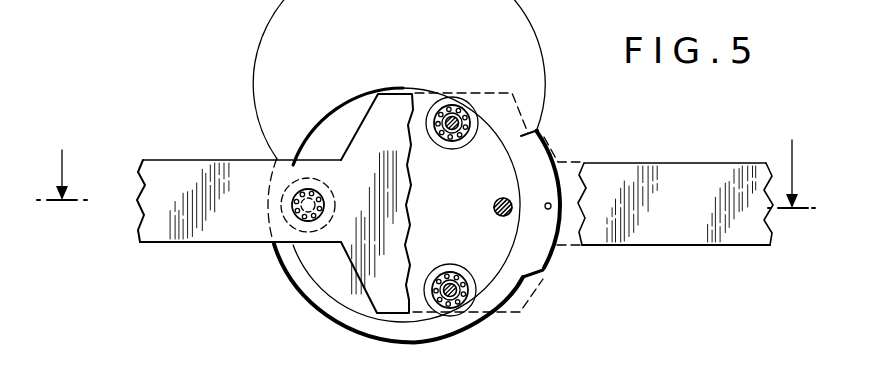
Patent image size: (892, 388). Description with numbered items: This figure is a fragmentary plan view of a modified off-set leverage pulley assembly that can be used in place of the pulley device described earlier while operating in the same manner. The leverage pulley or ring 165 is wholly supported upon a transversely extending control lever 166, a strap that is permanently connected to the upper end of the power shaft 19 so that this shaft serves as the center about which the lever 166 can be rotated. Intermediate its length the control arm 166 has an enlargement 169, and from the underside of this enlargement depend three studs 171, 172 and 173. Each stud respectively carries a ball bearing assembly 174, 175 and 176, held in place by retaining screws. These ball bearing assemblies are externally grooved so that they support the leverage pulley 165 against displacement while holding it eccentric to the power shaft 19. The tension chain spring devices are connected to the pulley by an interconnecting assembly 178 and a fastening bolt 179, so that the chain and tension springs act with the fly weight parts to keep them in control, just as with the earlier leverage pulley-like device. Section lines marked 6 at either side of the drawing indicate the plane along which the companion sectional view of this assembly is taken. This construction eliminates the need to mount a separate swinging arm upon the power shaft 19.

The section line 6 is at (426, 186).
The power shaft 19 is at (503, 200).
The leverage pulley 165 is at (348, 86).
The control lever 166 is at (162, 168).
The enlargement 169 is at (376, 282).
The stud 171 is at (270, 246).
The stud 172 is at (458, 117).
The stud 173 is at (449, 292).
The ball bearing assembly 174 is at (294, 243).
The ball bearing assembly 175 is at (436, 95).
The ball bearing assembly 176 is at (439, 263).
The interconnecting assembly 178 is at (541, 250).
The fastening bolt 179 is at (550, 203).